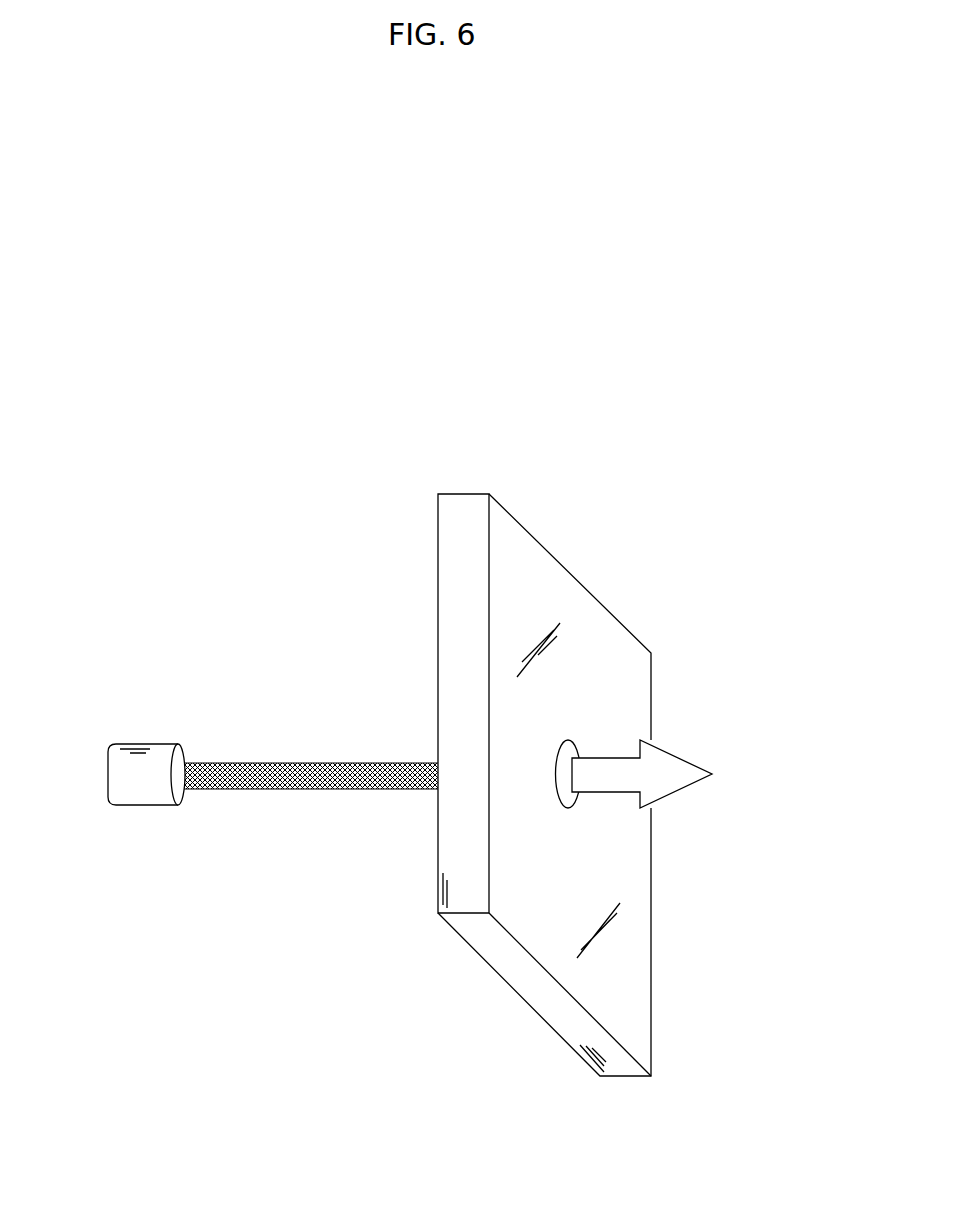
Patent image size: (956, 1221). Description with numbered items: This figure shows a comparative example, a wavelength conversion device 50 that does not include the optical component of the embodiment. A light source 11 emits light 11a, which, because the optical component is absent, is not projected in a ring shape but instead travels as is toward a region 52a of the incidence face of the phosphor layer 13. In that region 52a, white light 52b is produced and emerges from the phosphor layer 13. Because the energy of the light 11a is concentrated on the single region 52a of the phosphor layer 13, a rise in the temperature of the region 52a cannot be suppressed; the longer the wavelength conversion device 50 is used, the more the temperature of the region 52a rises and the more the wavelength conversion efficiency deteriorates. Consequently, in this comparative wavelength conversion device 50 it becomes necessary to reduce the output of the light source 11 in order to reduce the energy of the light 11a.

The wavelength conversion device 50 is at (555, 388).
The phosphor layer 13 is at (555, 556).
The light source 11 is at (140, 745).
The light 11a is at (330, 792).
The region 52a is at (568, 808).
The white light 52b is at (668, 762).